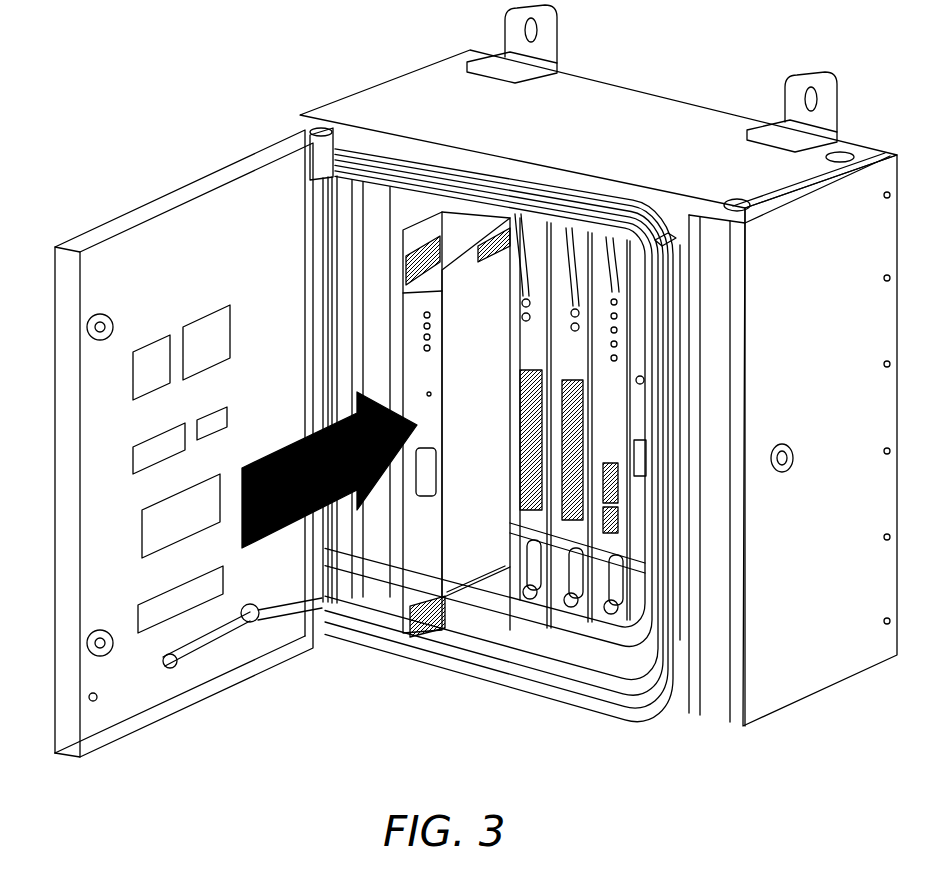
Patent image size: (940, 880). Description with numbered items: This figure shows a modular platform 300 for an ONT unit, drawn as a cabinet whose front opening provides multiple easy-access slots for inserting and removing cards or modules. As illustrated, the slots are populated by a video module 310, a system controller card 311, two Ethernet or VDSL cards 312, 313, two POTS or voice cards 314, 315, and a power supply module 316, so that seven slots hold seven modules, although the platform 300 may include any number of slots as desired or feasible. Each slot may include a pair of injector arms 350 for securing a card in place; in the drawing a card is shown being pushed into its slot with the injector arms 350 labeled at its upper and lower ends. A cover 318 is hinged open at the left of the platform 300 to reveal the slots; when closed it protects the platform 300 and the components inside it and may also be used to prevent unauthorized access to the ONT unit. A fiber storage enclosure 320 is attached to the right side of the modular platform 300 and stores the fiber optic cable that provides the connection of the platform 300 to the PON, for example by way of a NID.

The modular platform 300 is at (600, 87).
The video module 310 is at (668, 243).
The system controller card 311 is at (633, 213).
The Ethernet or VDSL card 312 is at (587, 207).
The Ethernet or VDSL card 313 is at (545, 190).
The POTS or voice card 314 is at (483, 180).
The POTS or voice card 315 is at (425, 170).
The power supply module 316 is at (316, 132).
The cover 318 is at (197, 228).
The fiber storage enclosure 320 is at (847, 193).
The injector arms 350 is at (424, 237).